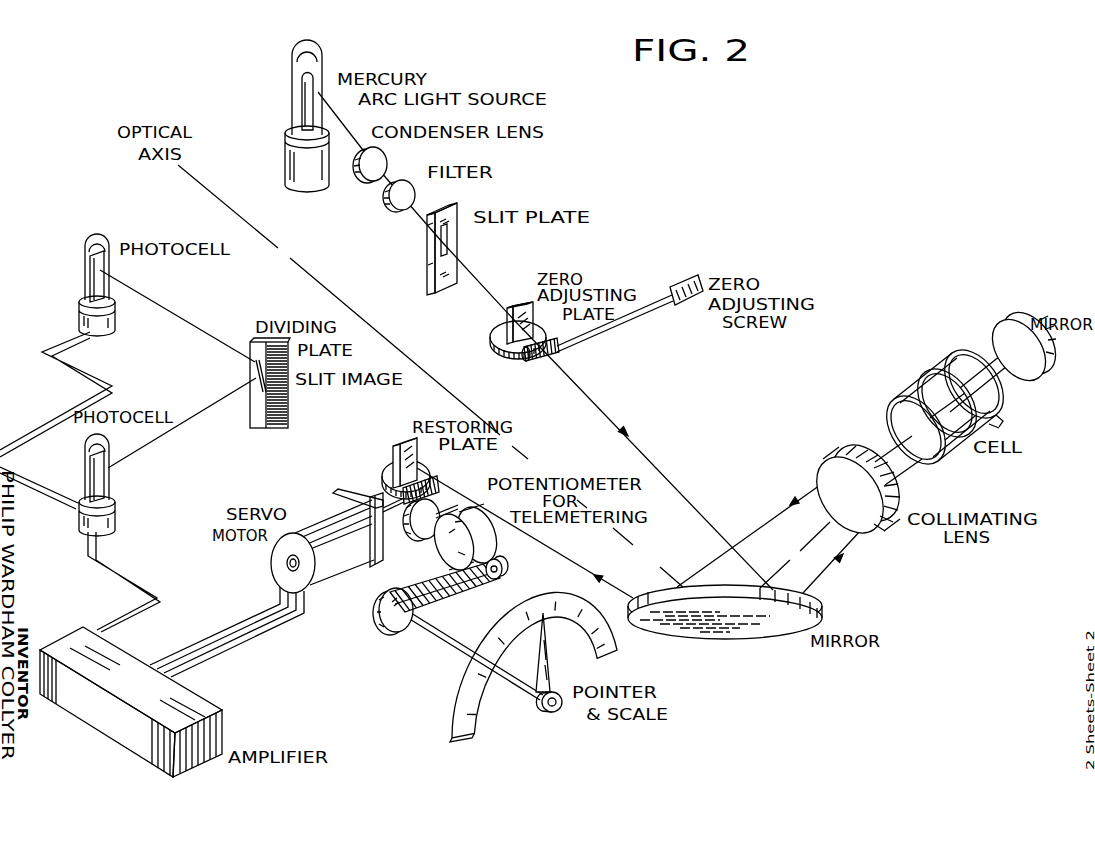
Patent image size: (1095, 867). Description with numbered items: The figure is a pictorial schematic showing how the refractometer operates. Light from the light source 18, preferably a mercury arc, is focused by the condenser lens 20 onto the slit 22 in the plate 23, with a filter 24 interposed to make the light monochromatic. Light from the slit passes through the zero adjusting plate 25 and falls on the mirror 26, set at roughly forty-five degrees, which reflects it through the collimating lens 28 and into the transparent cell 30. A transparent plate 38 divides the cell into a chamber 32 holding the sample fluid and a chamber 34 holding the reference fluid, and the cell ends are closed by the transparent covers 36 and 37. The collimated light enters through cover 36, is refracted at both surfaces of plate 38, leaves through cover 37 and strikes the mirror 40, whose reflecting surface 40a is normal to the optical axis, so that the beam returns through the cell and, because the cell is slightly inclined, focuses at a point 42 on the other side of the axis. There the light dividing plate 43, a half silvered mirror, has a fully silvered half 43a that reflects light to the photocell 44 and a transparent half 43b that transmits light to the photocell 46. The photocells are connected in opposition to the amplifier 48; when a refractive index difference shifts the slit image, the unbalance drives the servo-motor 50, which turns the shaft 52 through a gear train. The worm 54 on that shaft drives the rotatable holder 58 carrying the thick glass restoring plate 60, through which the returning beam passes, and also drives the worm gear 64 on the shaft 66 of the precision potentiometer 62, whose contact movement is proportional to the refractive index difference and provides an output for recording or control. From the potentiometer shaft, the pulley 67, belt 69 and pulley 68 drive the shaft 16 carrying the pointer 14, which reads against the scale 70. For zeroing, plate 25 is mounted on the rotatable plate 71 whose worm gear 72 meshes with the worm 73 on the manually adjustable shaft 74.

The pointer 14 is at (547, 662).
The shaft 16 is at (459, 652).
The light source 18 is at (307, 92).
The condenser lens 20 is at (383, 161).
The slit 22 is at (441, 246).
The plate 23 is at (450, 249).
The filter 24 is at (414, 195).
The zero adjusting plate 25 is at (505, 318).
The mirror 26 is at (831, 614).
The collimating lens 28 is at (887, 514).
The transparent cell 30 is at (960, 452).
The chamber 32 is at (910, 392).
The chamber 34 is at (984, 423).
The transparent cover 36 is at (933, 454).
The transparent cover 37 is at (958, 364).
The transparent plate 38 is at (927, 381).
The mirror 40 is at (1013, 322).
The reflecting surface 40a is at (1000, 344).
The point 42 is at (250, 375).
The light dividing plate 43 is at (269, 397).
The silvered half 43a is at (278, 415).
The transparent half 43b is at (255, 400).
The photocell 44 is at (108, 470).
The photocell 46 is at (108, 268).
The amplifier 48 is at (203, 706).
The servo-motor 50 is at (348, 558).
The shaft 52 is at (385, 502).
The worm 54 is at (427, 493).
The rotatable holder 58 is at (388, 467).
The restoring plate 60 is at (398, 446).
The precision potentiometer 62 is at (447, 543).
The worm gear 64 is at (440, 510).
The potentiometer shaft 66 is at (437, 527).
The pulley 67 is at (395, 630).
The pulley 68 is at (500, 572).
The belt 69 is at (466, 590).
The scale 70 is at (475, 676).
The rotatable plate 71 is at (500, 338).
The worm gear 72 is at (508, 354).
The worm 73 is at (547, 364).
The manually adjustable shaft 74 is at (614, 331).